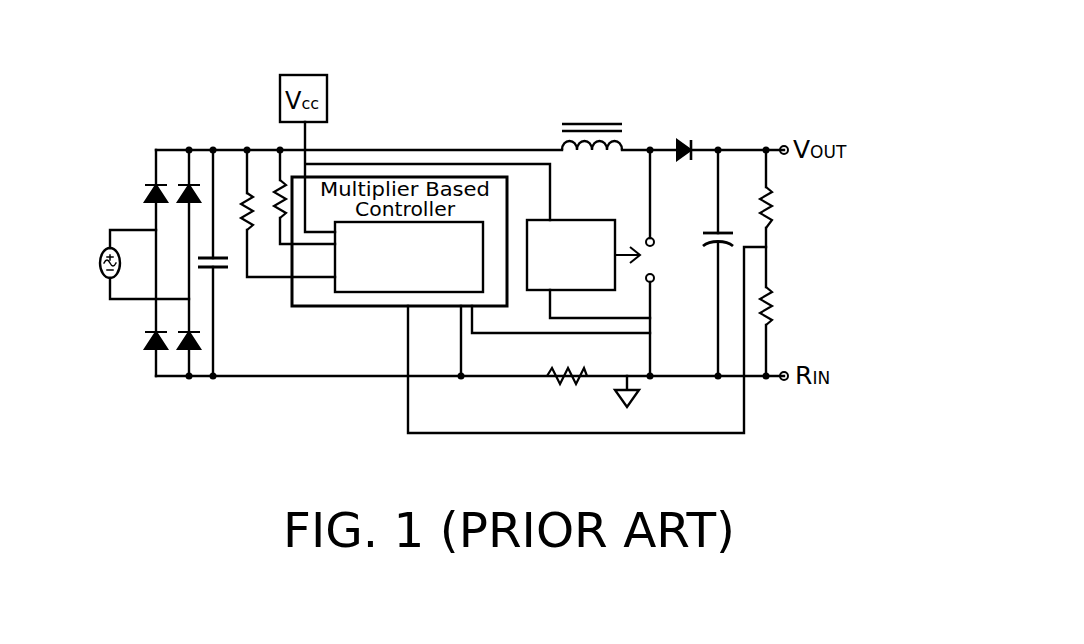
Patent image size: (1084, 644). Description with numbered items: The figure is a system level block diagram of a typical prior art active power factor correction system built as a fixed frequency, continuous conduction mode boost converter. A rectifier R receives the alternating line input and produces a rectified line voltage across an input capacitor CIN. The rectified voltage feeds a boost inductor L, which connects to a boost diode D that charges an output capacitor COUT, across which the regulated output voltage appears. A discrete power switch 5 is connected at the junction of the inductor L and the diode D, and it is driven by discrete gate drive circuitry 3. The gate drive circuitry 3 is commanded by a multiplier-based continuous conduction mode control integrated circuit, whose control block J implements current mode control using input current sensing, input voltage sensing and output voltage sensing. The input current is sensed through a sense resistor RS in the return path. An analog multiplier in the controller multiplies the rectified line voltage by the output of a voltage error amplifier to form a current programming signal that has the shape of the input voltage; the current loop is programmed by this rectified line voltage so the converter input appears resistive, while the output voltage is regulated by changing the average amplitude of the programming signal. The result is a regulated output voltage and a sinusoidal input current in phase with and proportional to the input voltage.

The gate drive circuitry 3 is at (570, 221).
The power switch 5 is at (652, 275).
The inductor L is at (590, 122).
The diode D is at (678, 136).
The rectifier R is at (135, 328).
The control block J is at (370, 276).
The input capacitor CIN is at (224, 270).
The output capacitor COUT is at (733, 233).
The sense resistor RS is at (567, 393).